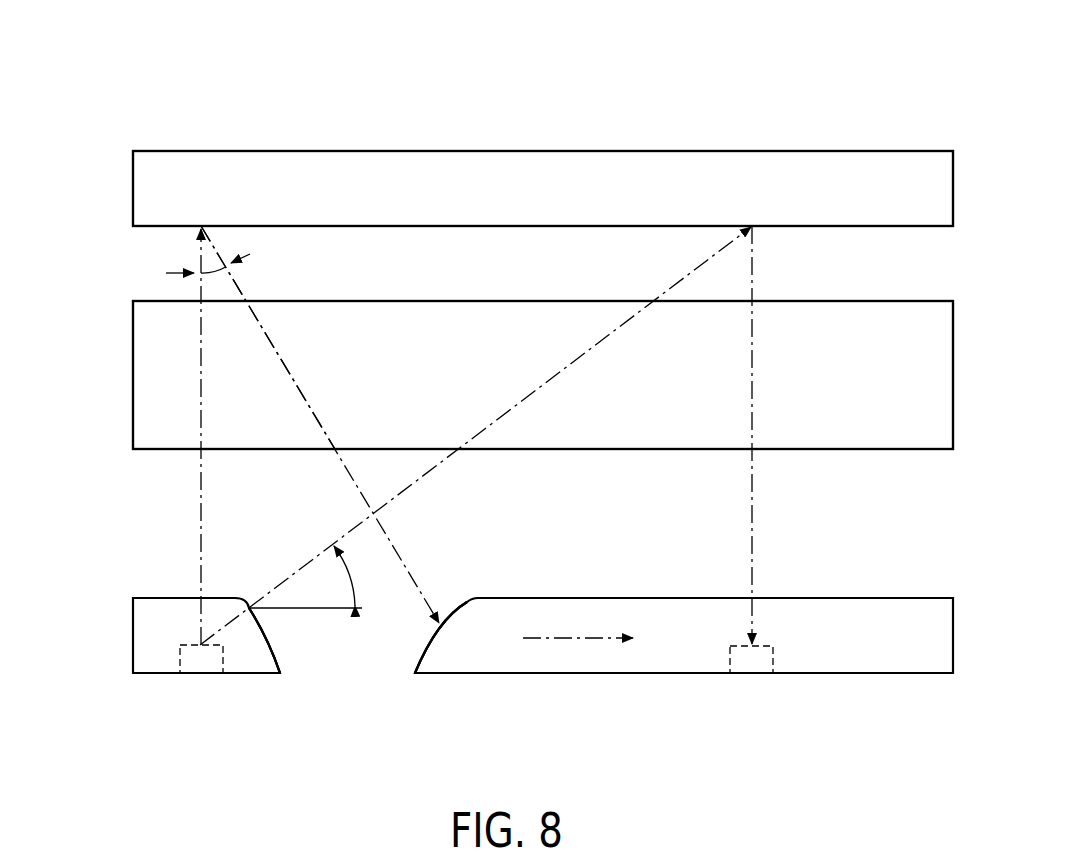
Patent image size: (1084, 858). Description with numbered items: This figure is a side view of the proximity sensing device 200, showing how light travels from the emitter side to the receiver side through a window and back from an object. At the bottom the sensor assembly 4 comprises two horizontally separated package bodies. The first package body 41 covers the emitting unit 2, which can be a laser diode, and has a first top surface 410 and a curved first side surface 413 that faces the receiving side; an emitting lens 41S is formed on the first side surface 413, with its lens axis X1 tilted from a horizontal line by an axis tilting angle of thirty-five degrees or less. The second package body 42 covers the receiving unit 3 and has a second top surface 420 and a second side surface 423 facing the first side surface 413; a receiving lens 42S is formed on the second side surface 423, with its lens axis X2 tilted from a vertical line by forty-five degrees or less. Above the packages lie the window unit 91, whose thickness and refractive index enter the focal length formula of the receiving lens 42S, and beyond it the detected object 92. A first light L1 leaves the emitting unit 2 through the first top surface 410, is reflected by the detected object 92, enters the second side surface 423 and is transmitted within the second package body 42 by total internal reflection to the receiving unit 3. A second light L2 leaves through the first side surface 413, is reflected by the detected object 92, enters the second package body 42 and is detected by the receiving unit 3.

The optical system / display device 200 is at (629, 112).
The detected object 92 is at (133, 188).
The window unit 91 is at (133, 372).
The light guide assembly 4 is at (503, 645).
The first package body 41 is at (232, 644).
The first top surface 410 is at (172, 597).
The emitting lens 41S is at (263, 626).
The first side surface 413 is at (263, 641).
The emitting unit 2 is at (176, 657).
The second package body 42 is at (689, 645).
The receiving lens 42S is at (445, 618).
The second side surface 423 is at (433, 643).
The second top surface 420 is at (851, 598).
The receiving unit 3 is at (761, 668).
The lens axis X1 is at (585, 350).
The lens axis X2 is at (330, 440).
The first light L1 is at (293, 373).
The second light L2 is at (755, 392).